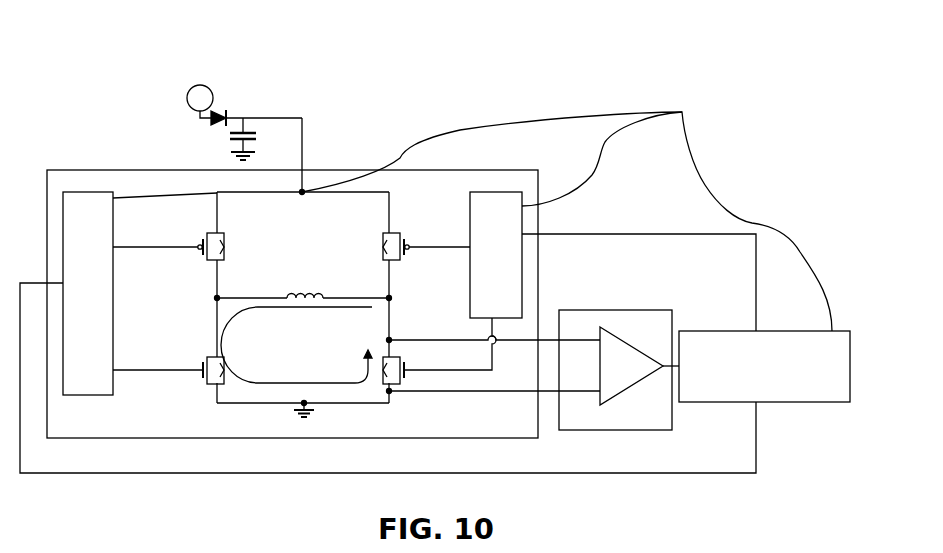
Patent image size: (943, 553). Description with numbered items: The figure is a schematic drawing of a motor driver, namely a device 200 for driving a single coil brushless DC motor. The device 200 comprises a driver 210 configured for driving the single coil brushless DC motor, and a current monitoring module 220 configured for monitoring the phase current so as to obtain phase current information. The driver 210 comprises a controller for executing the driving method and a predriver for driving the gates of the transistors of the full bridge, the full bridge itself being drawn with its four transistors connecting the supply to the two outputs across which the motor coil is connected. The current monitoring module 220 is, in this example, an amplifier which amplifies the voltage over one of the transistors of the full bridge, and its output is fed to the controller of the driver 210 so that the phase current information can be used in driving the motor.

The device 200 is at (137, 85).
The driver 210 is at (567, 193).
The current monitoring module 220 is at (638, 307).